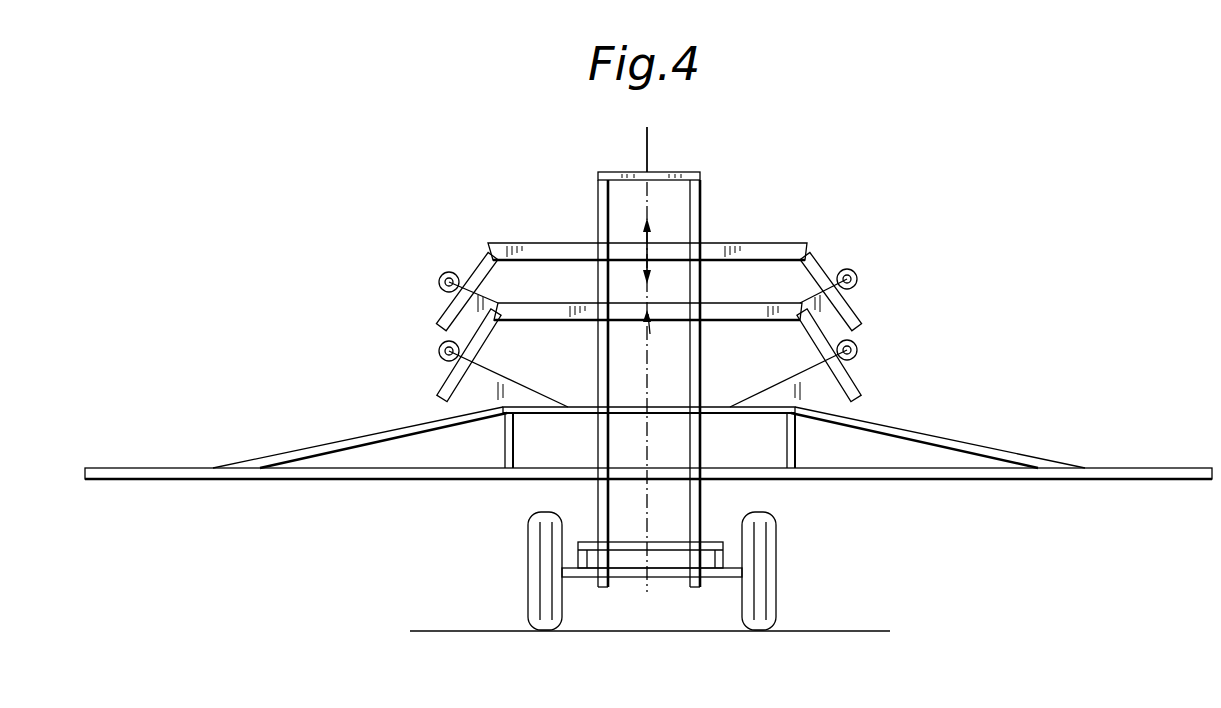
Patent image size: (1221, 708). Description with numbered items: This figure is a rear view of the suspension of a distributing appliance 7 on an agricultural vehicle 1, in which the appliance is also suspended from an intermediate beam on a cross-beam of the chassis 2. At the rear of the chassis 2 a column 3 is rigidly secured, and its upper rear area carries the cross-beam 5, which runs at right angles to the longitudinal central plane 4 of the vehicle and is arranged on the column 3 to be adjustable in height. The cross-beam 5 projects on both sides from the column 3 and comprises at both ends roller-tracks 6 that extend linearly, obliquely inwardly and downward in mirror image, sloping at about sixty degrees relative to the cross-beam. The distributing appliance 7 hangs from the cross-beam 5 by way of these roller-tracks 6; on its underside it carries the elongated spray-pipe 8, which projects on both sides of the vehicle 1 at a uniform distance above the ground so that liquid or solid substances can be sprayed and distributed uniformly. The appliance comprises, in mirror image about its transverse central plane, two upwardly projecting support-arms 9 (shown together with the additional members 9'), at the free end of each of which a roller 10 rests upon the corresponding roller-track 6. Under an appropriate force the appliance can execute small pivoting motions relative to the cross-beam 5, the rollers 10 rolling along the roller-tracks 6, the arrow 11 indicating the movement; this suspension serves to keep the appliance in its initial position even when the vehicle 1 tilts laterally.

The agricultural vehicle 1 is at (512, 567).
The chassis 2 is at (622, 576).
The column 3 is at (700, 203).
The longitudinal central plane 4 is at (648, 150).
The cross-beam 5 is at (741, 256).
The roller-tracks 6 is at (473, 263).
The distributing appliance 7 is at (309, 442).
The spray-pipe 8 is at (145, 468).
The support-arms 9 is at (648, 376).
The middle cross bar tie line 9' is at (648, 293).
The rollers 10 is at (438, 283).
The direction arrow 11 is at (647, 336).